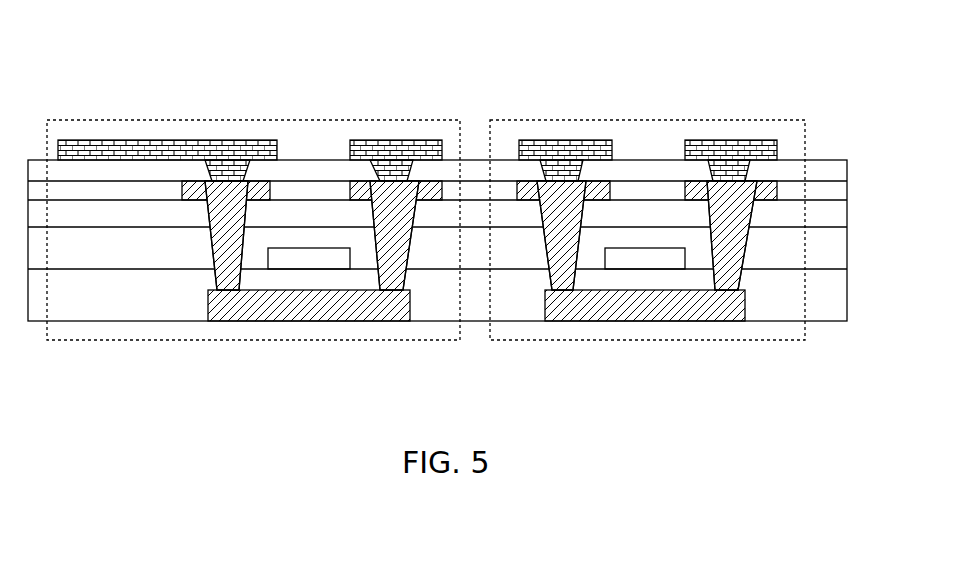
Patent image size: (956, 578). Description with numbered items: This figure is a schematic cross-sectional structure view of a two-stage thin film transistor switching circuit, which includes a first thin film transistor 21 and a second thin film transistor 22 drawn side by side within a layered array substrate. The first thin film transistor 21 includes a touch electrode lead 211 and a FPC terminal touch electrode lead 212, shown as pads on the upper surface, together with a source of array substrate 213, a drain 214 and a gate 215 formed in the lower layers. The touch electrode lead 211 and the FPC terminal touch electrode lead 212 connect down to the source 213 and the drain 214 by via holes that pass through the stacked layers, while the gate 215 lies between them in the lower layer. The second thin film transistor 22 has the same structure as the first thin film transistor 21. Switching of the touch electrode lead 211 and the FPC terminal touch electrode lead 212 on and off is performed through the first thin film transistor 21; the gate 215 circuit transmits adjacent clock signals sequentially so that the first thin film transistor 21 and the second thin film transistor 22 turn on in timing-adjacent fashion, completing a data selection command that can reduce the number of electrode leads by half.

The first thin film transistor 21 is at (458, 120).
The second thin film transistor 22 is at (803, 120).
The touch electrode lead 211 is at (233, 140).
The FPC terminal touch electrode lead 212 is at (393, 140).
The source of array substrate 213 is at (210, 243).
The drain 214 is at (407, 240).
The gate 215 is at (310, 257).